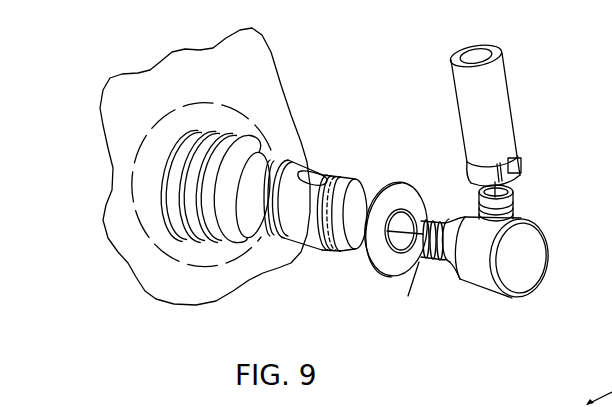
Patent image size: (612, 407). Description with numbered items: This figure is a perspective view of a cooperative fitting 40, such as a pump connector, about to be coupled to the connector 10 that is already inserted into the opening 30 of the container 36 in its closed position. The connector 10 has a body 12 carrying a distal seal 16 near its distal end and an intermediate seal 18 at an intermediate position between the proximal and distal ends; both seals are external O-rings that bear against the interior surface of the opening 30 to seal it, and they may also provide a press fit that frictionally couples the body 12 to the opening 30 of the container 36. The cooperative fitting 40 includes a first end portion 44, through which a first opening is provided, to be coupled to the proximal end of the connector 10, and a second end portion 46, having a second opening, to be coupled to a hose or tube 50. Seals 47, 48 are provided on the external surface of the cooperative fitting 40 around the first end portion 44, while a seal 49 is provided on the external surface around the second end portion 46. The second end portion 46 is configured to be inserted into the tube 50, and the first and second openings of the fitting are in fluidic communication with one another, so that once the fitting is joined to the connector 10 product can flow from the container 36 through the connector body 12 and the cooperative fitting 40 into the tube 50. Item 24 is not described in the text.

The connector 10 is at (401, 141).
The body 12 is at (313, 255).
The distal seal 16 is at (308, 161).
The intermediate seal 18 is at (348, 180).
The flange 24 is at (381, 278).
The opening 30 is at (167, 226).
The container 36 is at (262, 32).
The cooperative fitting 40 is at (537, 215).
The first end portion 44 is at (433, 275).
The second end portion 46 is at (526, 194).
The seal 47 is at (409, 287).
The seal 48 is at (445, 218).
The seal 49 is at (512, 191).
The tube 50 is at (513, 104).